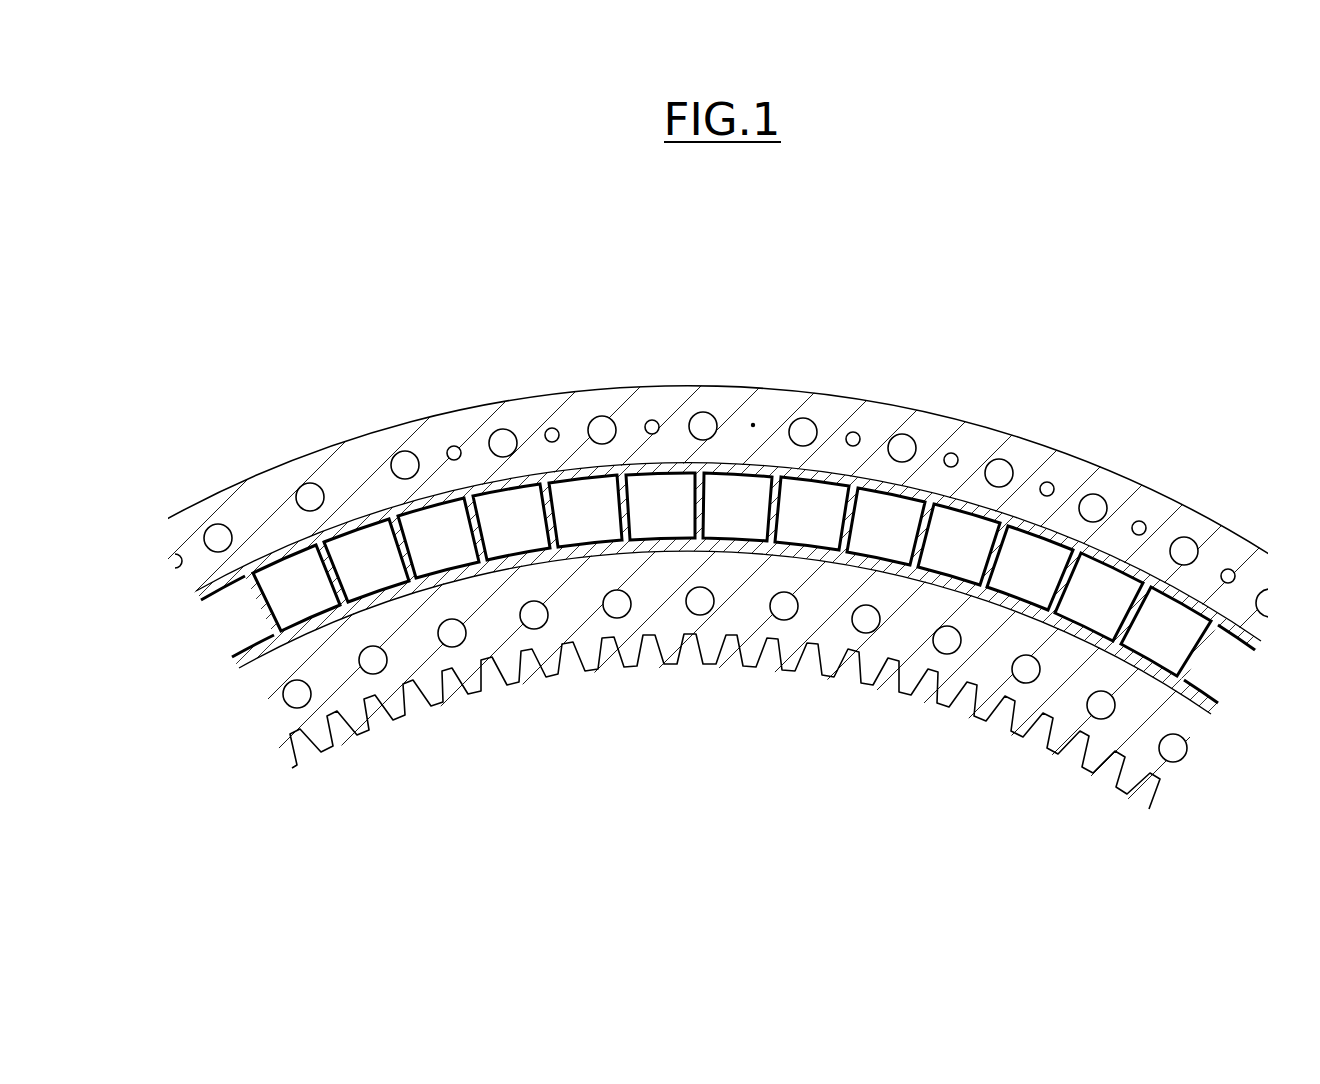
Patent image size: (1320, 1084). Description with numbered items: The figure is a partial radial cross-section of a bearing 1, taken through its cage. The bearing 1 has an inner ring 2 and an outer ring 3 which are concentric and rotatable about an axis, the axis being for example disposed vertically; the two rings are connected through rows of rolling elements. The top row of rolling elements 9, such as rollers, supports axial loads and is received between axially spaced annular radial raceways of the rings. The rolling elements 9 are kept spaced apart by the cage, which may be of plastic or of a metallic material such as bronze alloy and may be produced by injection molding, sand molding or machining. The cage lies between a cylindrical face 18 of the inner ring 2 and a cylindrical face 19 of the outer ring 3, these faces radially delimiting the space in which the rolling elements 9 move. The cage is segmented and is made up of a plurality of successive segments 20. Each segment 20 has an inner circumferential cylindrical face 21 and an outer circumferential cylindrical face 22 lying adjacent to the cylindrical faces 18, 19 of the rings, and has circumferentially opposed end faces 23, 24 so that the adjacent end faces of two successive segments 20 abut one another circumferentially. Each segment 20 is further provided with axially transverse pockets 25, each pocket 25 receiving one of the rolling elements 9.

The bearing 1 is at (1082, 386).
The inner ring 2 is at (740, 600).
The outer ring 3 is at (772, 423).
The rolling elements 9 is at (323, 562).
The cylindrical face 18 is at (262, 646).
The cylindrical face 19 is at (212, 600).
The segment 20 is at (975, 500).
The inner circumferential cylindrical face 21 is at (551, 585).
The outer circumferential cylindrical face 22 is at (480, 490).
The abutting end face 23 is at (709, 495).
The abutting end face 24 is at (312, 572).
The pocket 25 is at (360, 557).